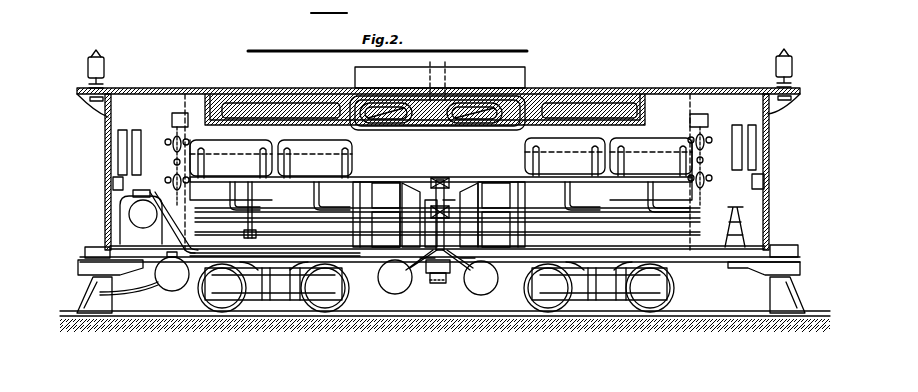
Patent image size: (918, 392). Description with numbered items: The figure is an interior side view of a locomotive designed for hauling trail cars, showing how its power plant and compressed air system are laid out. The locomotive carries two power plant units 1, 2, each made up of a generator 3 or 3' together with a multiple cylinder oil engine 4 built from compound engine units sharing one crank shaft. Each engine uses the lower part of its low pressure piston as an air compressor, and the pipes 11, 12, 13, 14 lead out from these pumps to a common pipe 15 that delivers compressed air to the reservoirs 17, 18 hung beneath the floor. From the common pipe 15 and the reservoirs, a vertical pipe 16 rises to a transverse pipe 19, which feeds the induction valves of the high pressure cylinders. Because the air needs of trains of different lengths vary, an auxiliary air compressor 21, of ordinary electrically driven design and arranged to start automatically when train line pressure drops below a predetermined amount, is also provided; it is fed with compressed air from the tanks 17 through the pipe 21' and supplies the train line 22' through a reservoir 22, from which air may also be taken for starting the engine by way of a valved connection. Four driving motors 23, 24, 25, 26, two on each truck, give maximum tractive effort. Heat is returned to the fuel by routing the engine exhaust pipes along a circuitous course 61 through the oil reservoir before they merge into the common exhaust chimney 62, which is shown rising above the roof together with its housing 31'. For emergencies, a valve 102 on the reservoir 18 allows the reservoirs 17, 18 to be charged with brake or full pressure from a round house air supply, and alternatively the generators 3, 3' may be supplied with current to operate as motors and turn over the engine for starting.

The power plant unit 1 is at (376, 197).
The power plant unit 2 is at (501, 198).
The generator 3 is at (396, 215).
The generator 3' is at (476, 215).
The multiple cylinder oil engine 4 is at (441, 152).
The pipe 11 is at (240, 196).
The pipe 12 is at (320, 194).
The pipe 13 is at (565, 196).
The pipe 14 is at (648, 196).
The common pipe 15 is at (386, 195).
The vertical pipe 16 is at (438, 182).
The reservoir 17 is at (407, 272).
The reservoir 18 is at (470, 272).
The transverse pipe 19 is at (398, 180).
The auxiliary air compressor 21 is at (141, 217).
The pipe 21' is at (185, 222).
The reservoir 22 is at (172, 271).
The train line 22' is at (129, 298).
The driving motor 23 is at (268, 300).
The driving motor 24 is at (297, 300).
The driving motor 25 is at (590, 300).
The driving motor 26 is at (620, 300).
The ventilator housing 31' is at (440, 77).
The circuitous course 61 is at (530, 92).
The common exhaust chimney 62 is at (446, 65).
The valve 102 is at (450, 288).